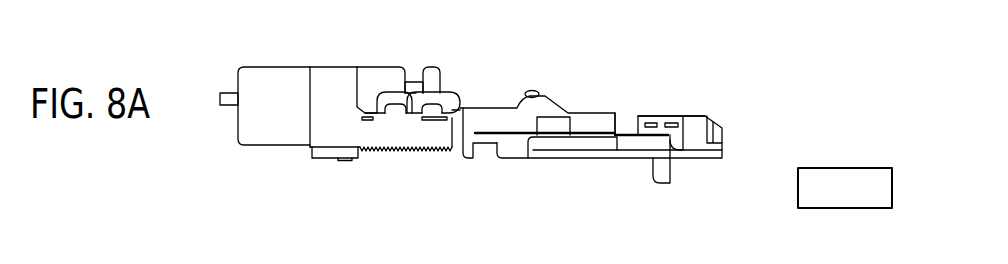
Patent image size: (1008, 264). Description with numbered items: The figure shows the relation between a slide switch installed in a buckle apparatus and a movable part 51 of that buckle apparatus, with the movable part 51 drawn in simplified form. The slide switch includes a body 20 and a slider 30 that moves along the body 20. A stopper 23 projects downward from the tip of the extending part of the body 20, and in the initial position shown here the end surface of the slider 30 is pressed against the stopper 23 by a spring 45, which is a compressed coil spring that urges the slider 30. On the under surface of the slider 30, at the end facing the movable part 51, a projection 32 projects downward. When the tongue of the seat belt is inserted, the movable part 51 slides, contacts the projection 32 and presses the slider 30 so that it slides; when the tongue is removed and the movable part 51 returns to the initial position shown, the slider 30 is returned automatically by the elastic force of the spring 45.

The body 20 is at (487, 108).
The stopper 23 is at (663, 132).
The slider 30 is at (603, 158).
The projection 32 is at (670, 172).
The spring 45 is at (428, 151).
The movable part 51 is at (823, 208).